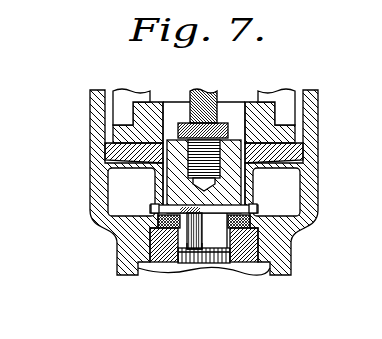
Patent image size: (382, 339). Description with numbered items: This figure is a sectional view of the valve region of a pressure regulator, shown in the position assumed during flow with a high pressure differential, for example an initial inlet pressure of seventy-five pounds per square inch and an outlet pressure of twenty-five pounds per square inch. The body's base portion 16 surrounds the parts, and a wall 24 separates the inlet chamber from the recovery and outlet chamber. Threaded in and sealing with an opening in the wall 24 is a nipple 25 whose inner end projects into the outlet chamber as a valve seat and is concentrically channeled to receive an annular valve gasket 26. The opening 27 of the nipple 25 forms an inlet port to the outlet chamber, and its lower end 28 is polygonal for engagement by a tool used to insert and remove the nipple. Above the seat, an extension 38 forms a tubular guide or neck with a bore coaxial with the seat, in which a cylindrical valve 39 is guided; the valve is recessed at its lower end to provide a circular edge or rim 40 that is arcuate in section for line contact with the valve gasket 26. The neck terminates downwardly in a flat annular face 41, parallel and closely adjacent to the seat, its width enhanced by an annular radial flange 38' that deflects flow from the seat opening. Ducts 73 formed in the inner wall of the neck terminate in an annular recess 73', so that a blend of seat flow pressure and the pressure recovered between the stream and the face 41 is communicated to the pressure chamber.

The base portion 16 is at (92, 117).
The wall 24 is at (128, 248).
The nipple 25 is at (165, 253).
The annular valve gasket 26 is at (242, 253).
The opening 27 is at (204, 243).
The lower end 28 is at (208, 258).
The extension 38 is at (199, 192).
The annular radial flange 38' is at (136, 196).
The cylindrical valve 39 is at (175, 164).
The circular edge or rim 40 is at (194, 226).
The flat annular face 41 is at (152, 210).
The ducts 73 is at (263, 154).
The annular recess 73' is at (269, 202).